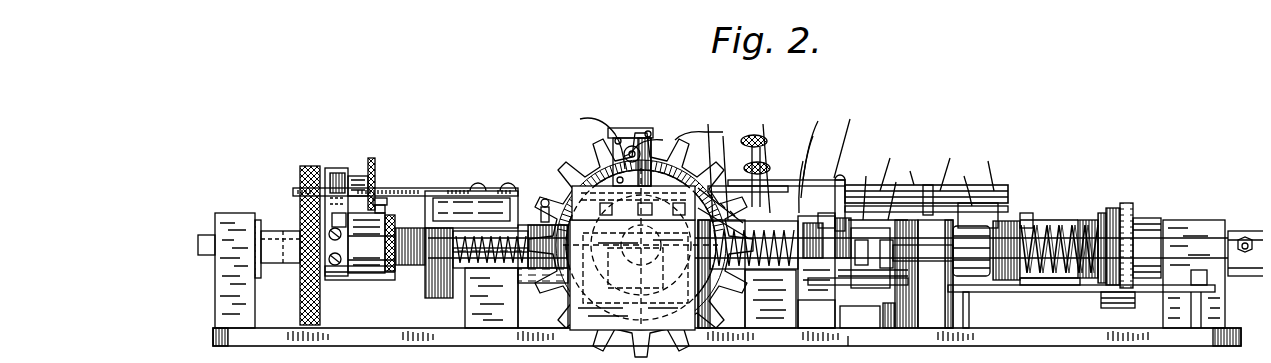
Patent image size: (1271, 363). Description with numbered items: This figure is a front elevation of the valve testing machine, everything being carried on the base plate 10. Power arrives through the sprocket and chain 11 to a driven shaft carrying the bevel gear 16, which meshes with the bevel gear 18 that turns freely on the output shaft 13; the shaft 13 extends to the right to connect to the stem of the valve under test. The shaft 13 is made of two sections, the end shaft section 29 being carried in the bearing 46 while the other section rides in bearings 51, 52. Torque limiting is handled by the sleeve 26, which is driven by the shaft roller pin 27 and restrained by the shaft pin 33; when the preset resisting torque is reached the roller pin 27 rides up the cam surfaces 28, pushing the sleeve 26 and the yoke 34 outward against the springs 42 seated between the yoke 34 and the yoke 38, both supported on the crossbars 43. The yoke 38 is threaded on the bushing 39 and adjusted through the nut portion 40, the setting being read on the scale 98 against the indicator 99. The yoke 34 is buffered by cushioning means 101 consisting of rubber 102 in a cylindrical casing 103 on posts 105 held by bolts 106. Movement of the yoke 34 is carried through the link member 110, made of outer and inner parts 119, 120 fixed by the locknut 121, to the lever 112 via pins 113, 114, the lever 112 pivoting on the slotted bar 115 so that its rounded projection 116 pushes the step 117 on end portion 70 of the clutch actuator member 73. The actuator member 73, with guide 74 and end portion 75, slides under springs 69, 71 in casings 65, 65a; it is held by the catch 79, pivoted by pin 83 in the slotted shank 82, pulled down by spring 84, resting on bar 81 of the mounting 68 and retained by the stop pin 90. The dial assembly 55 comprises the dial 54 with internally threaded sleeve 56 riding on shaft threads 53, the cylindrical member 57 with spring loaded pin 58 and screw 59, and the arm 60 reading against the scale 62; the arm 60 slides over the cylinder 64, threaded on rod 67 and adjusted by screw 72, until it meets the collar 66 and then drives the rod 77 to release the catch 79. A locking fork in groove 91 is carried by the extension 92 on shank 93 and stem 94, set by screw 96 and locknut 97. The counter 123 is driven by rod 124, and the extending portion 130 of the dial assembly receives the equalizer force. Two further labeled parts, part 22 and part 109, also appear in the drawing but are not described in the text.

The base plate 10 is at (1236, 331).
The sprocket and chain 11 is at (592, 135).
The shaft 13 is at (198, 223).
The bevel gear 16 is at (590, 170).
The bevel gear 18 is at (526, 212).
The bracket 22 is at (892, 315).
The sleeve 26 is at (895, 193).
The shaft roller pin 27 is at (846, 175).
The cam surfaces 28 is at (872, 188).
The shaft section 29 is at (1045, 212).
The shaft pin 33 is at (962, 182).
The yoke 34 is at (1019, 205).
The yoke 38 is at (1118, 195).
The bushing 39 is at (1092, 205).
The nut portion 40 is at (1142, 214).
The springs 42 is at (1070, 277).
The crossbars 43 is at (1040, 277).
The bearing 46 is at (1217, 295).
The bearing 51 is at (457, 301).
The bearing 52 is at (207, 277).
The shaft threads 53 is at (438, 183).
The dial 54 is at (298, 157).
The dial assembly 55 is at (331, 158).
The internally threaded sleeve 56 is at (330, 262).
The cylindrical member 57 is at (336, 272).
The spring loaded pin 58 is at (362, 148).
The screw 59 is at (372, 190).
The arm 60 is at (290, 255).
The scale 62 is at (286, 182).
The cylinder 64 is at (380, 265).
The casing 65 is at (727, 290).
The casing 65a is at (478, 262).
The collar 66 is at (370, 272).
The rod 67 is at (398, 265).
The mounting 68 is at (548, 290).
The spring 69 is at (740, 170).
The end portion 70 is at (888, 253).
The spring 71 is at (480, 260).
The screw 72 is at (403, 220).
The clutch actuator member 73 is at (632, 258).
The guide 74 is at (640, 248).
The end portion 75 is at (430, 262).
The rod 77 is at (710, 210).
The catch 79 is at (708, 162).
The bar 81 is at (612, 152).
The slotted shank 82 is at (540, 196).
The pin 83 is at (540, 190).
The spring 84 is at (714, 160).
The stop pin 90 is at (924, 274).
The groove 91 is at (812, 157).
The extension 92 is at (774, 172).
The shank 93 is at (801, 176).
The stem 94 is at (819, 139).
The screw 96 is at (752, 127).
The locknut 97 is at (780, 343).
The scale 98 is at (1080, 210).
The indicator 99 is at (982, 167).
The cushioning means 101 is at (965, 285).
The rubber 102 is at (1000, 284).
The cylindrical casing 103 is at (960, 320).
The posts 105 is at (832, 311).
The bolts 106 is at (859, 317).
The post 109 is at (838, 168).
The link member 110 is at (920, 176).
The lever 112 is at (870, 250).
The pin 113 is at (1000, 212).
The pin 114 is at (822, 205).
The slotted bar 115 is at (854, 138).
The rounded projection 116 is at (816, 272).
The step 117 is at (765, 262).
The outer part 119 is at (956, 166).
The inner part 120 is at (893, 166).
The locknut 121 is at (913, 169).
The counter 123 is at (662, 126).
The rod 124 is at (658, 132).
The extending portion 130 is at (825, 351).